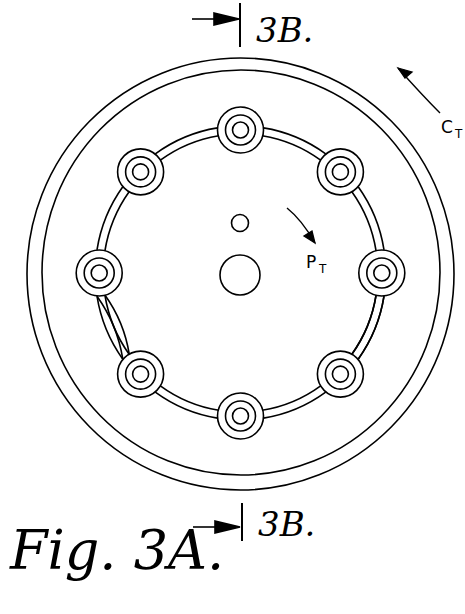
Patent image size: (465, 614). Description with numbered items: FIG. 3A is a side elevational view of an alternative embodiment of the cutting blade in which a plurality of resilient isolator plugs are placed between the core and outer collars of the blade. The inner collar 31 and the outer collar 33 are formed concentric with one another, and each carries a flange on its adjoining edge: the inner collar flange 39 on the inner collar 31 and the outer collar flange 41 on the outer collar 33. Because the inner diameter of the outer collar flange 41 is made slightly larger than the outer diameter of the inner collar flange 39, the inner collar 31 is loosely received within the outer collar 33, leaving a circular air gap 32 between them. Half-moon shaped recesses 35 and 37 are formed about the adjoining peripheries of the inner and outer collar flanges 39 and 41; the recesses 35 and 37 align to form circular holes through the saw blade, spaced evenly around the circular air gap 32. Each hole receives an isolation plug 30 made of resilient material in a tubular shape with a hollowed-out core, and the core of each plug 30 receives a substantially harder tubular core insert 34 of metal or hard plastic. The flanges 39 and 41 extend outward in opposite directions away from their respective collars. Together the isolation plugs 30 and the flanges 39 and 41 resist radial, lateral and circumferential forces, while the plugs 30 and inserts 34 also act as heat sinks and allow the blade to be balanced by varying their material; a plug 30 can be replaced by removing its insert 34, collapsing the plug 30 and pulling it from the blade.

The isolation plug 30 is at (352, 407).
The inner collar 31 is at (263, 387).
The circular air gap 32 is at (122, 352).
The outer collar 33 is at (175, 445).
The core insert 34 is at (342, 385).
The half-moon shaped recess 35 is at (322, 370).
The half-moon shaped recess 37 is at (357, 387).
The inner collar flange 39 is at (115, 323).
The outer collar flange 41 is at (105, 318).